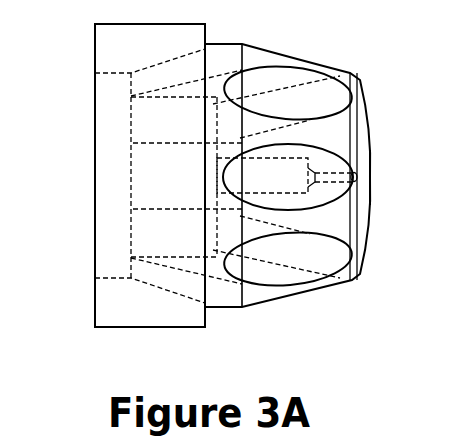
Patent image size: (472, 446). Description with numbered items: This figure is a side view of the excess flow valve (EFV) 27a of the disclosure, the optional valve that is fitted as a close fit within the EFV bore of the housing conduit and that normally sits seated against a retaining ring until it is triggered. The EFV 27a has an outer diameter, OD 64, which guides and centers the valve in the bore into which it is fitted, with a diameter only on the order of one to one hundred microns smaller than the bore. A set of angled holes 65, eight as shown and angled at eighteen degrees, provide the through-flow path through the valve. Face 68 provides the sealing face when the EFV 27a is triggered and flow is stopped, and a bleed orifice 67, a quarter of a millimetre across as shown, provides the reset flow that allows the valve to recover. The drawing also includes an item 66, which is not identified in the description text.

The OD 64 is at (150, 328).
The angled holes 65 is at (283, 250).
The internal bore 66 is at (112, 192).
The bleed orifice 67 is at (372, 160).
The face 68 is at (362, 171).
The excess flow valve (EFV) 27a is at (392, 173).